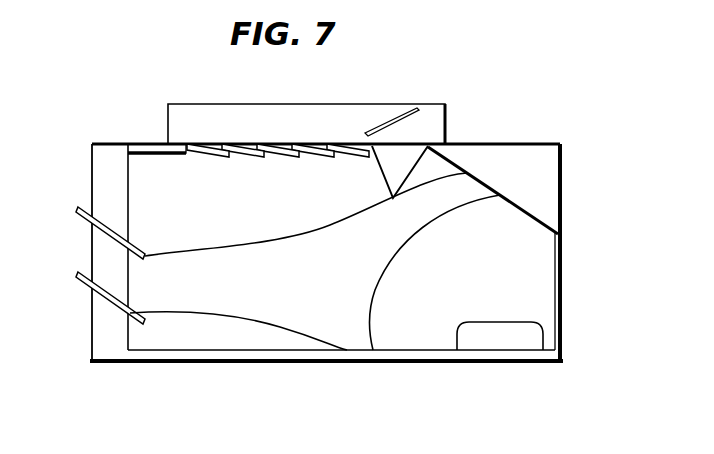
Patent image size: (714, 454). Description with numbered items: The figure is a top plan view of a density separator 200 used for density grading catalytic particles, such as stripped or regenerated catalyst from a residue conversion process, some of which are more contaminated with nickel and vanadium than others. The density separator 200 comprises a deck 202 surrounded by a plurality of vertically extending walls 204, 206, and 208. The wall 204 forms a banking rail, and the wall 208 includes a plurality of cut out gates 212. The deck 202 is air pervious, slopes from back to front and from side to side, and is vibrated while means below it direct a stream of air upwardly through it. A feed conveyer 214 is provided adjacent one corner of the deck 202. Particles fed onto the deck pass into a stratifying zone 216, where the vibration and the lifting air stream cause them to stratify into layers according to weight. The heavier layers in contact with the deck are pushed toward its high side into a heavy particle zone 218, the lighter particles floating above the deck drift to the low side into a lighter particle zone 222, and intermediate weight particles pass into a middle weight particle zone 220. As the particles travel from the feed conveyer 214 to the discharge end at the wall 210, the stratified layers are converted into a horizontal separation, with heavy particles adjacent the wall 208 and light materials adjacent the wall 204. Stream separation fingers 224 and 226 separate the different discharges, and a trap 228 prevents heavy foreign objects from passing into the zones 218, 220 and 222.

The density separator 200 is at (508, 138).
The deck 202 is at (386, 328).
The wall 204 is at (312, 357).
The wall 206 is at (565, 270).
The wall 208 is at (147, 144).
The wall 210 is at (92, 172).
The cut out gates 212 is at (253, 144).
The feed conveyer 214 is at (500, 338).
The stratifying zone 216 is at (478, 287).
The heavy particle zone 218 is at (246, 217).
The middle weight particle zone 220 is at (247, 293).
The lighter particle zone 222 is at (202, 341).
The stream separation finger 224 is at (78, 213).
The stream separation finger 226 is at (82, 283).
The trap 228 is at (402, 158).